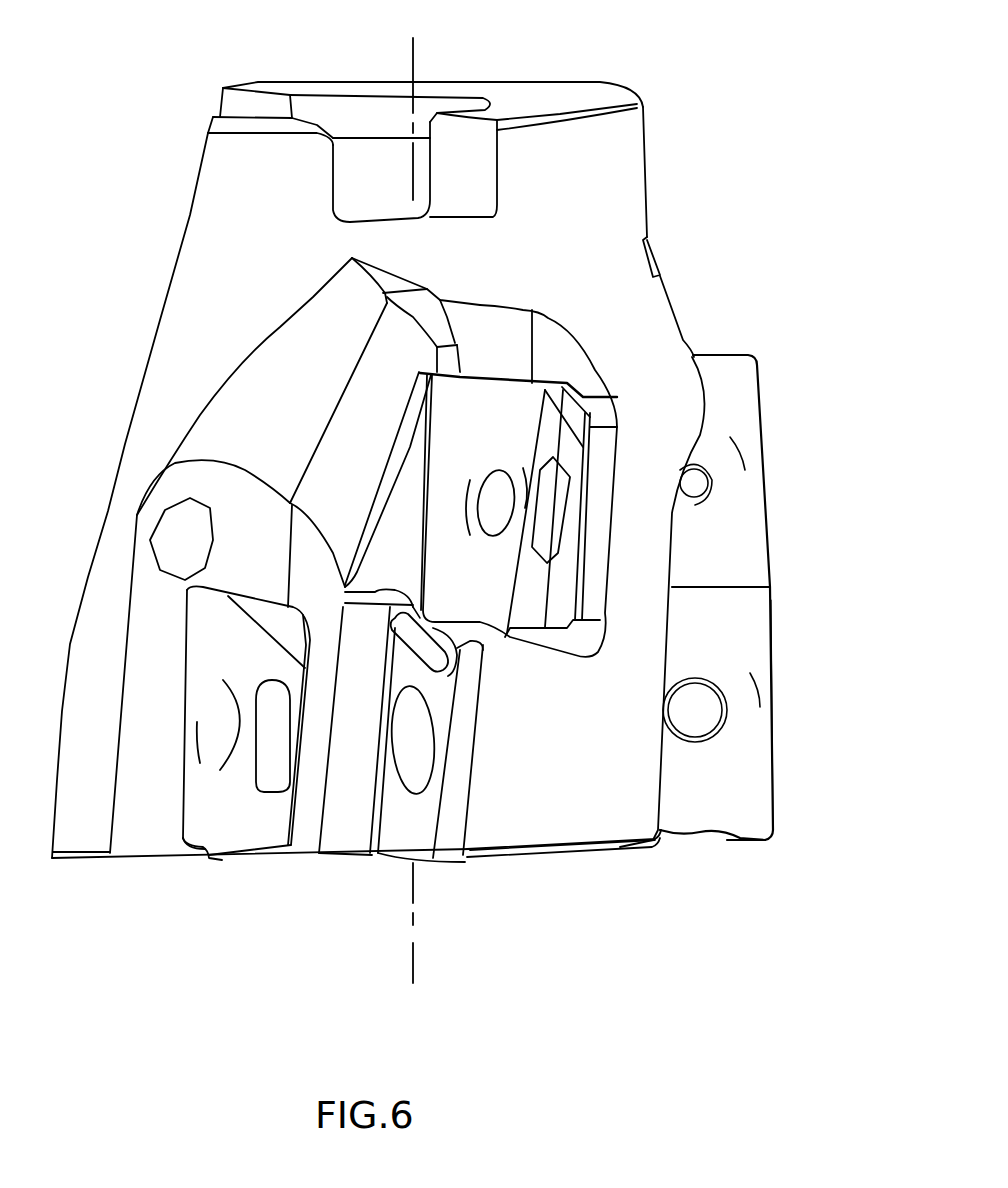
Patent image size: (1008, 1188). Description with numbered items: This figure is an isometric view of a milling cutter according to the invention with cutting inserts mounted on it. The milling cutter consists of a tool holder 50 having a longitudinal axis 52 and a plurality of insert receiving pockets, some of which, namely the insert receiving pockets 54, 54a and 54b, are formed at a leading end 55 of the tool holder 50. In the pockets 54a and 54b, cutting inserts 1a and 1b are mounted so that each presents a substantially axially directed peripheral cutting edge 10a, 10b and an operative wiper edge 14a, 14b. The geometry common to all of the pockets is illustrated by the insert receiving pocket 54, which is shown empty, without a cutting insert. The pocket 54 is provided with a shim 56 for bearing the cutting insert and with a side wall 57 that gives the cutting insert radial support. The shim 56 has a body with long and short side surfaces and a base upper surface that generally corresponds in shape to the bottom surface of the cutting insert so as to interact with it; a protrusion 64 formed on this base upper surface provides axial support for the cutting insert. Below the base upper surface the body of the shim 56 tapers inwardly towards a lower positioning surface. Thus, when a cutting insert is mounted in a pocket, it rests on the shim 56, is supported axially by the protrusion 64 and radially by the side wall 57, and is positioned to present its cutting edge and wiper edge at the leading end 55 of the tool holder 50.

The cutting insert 1a is at (753, 637).
The cutting insert 1b is at (203, 670).
The peripheral cutting edge 10a is at (777, 728).
The peripheral cutting edge 10b is at (230, 817).
The operative wiper edge 14a is at (753, 840).
The operative wiper edge 14b is at (203, 860).
The tool holder 50 is at (619, 173).
The longitudinal axis 52 is at (413, 60).
The insert receiving pocket 54 is at (357, 823).
The insert receiving pocket 54a is at (742, 588).
The insert receiving pocket 54b is at (258, 597).
The leading end 55 is at (384, 897).
The shim 56 is at (447, 860).
The side wall 57 is at (375, 712).
The protrusion 64 is at (457, 632).